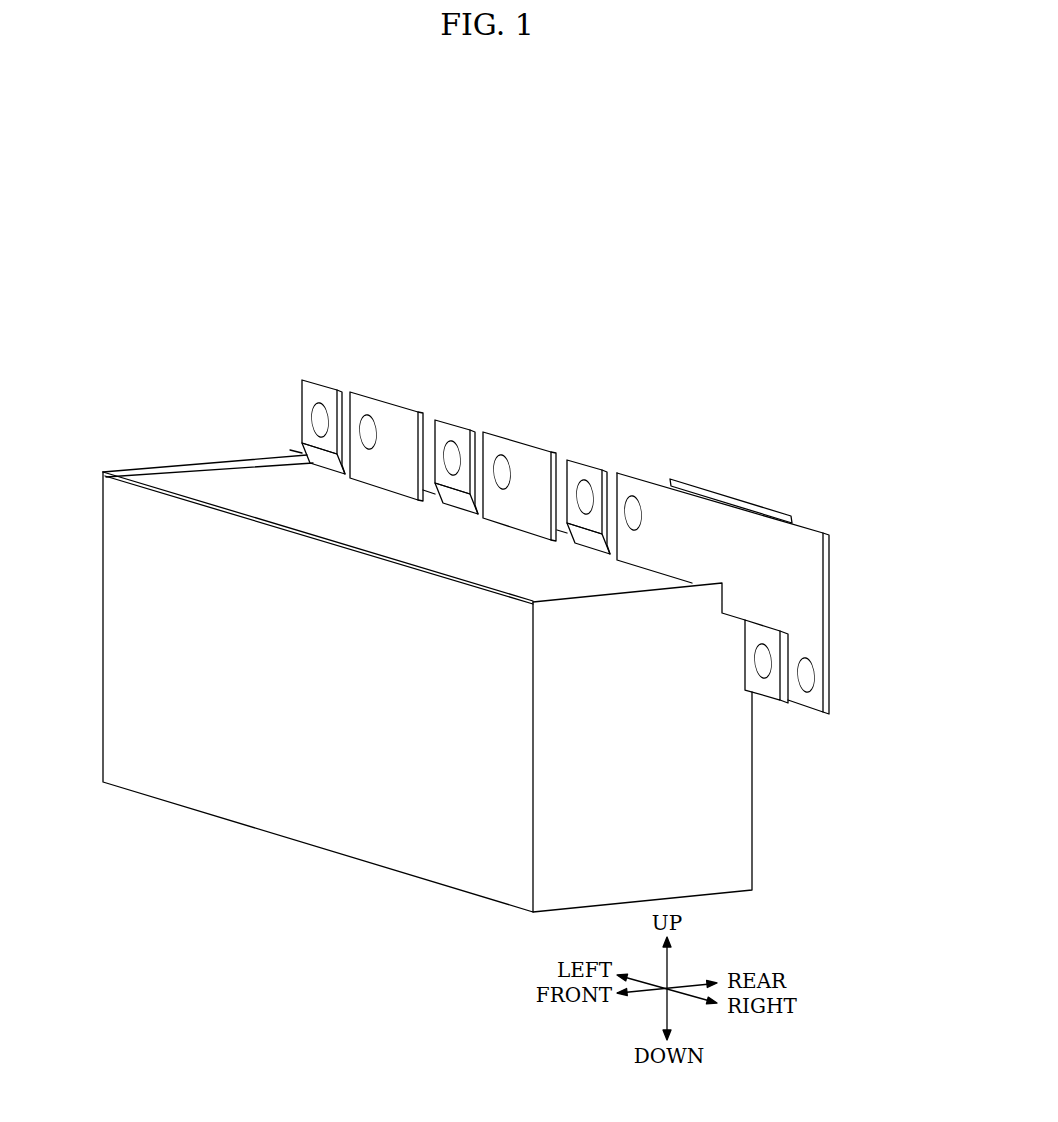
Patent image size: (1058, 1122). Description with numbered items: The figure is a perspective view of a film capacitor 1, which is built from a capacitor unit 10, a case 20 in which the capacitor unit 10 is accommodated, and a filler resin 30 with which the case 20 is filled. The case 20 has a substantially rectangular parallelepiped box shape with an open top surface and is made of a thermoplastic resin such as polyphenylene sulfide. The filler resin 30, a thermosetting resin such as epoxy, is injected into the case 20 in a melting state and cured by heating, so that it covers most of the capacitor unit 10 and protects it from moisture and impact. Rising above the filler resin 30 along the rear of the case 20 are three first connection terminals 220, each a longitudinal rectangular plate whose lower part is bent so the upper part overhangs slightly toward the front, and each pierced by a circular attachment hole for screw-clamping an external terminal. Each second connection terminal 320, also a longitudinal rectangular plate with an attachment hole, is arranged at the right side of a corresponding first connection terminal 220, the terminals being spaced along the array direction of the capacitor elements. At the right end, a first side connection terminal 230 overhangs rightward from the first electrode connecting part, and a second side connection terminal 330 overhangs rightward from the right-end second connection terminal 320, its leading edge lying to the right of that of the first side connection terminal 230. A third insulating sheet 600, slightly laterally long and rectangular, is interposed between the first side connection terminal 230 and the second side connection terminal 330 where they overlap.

The film capacitor 1 is at (144, 430).
The capacitor unit 10 is at (295, 412).
The case 20 is at (313, 828).
The filler resin 30 is at (250, 485).
The first connection terminal 220 is at (328, 386).
The first side connection terminal 230 is at (765, 697).
The second connection terminal 320 is at (373, 397).
The second side connection terminal 330 is at (812, 530).
The third insulating sheet 600 is at (725, 495).